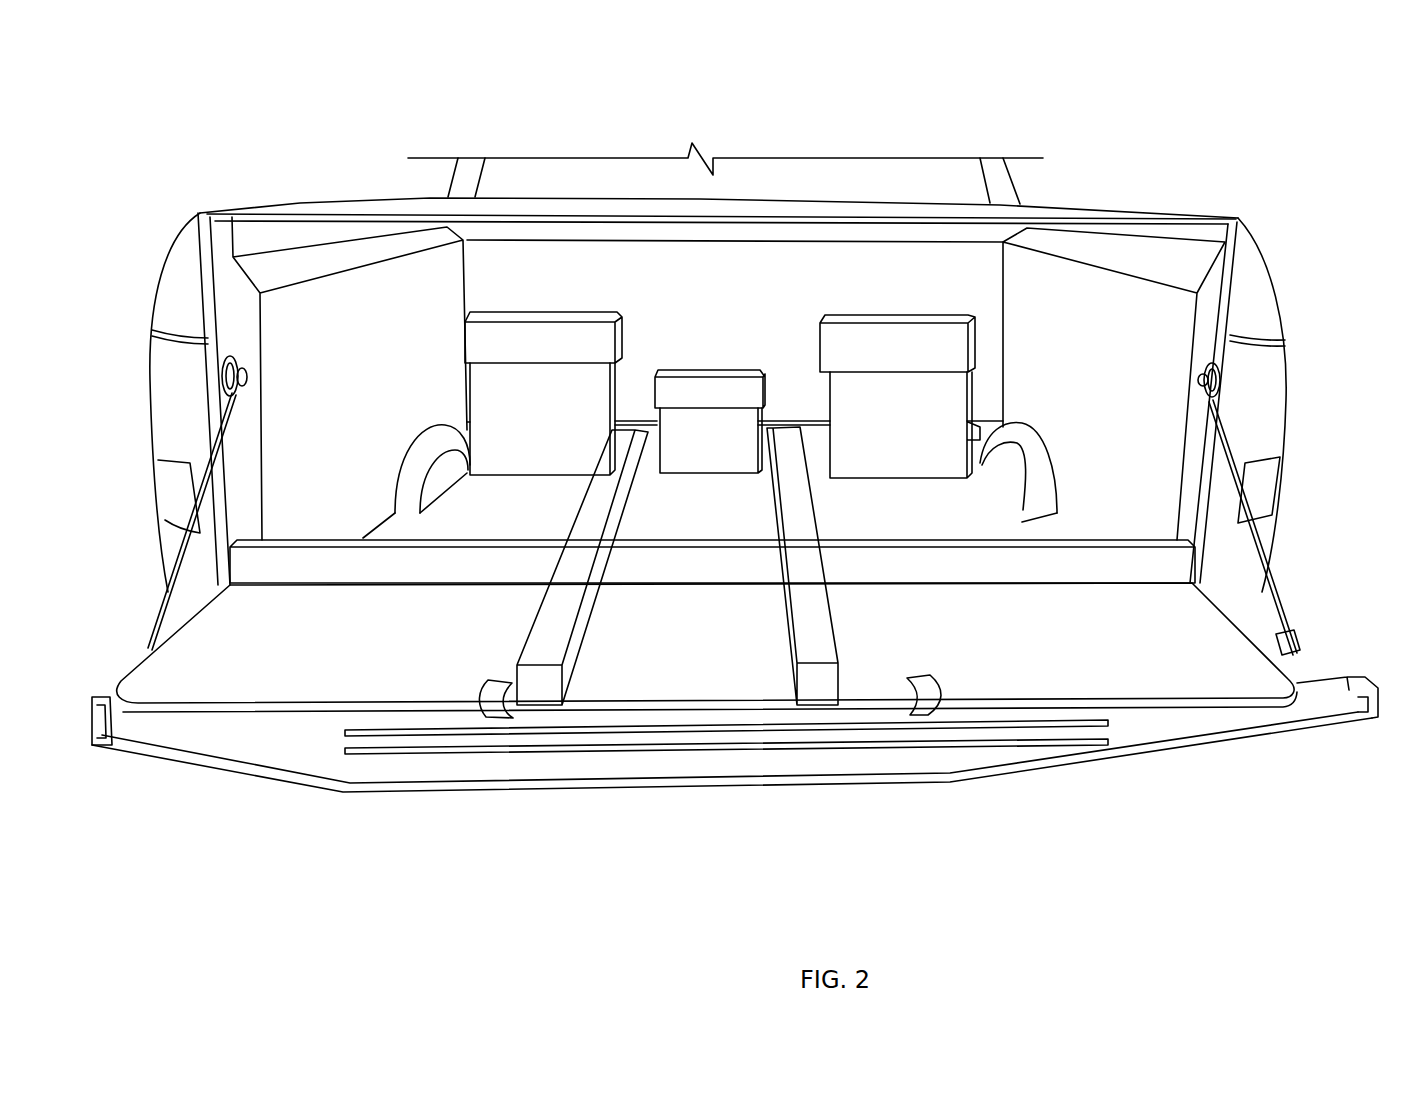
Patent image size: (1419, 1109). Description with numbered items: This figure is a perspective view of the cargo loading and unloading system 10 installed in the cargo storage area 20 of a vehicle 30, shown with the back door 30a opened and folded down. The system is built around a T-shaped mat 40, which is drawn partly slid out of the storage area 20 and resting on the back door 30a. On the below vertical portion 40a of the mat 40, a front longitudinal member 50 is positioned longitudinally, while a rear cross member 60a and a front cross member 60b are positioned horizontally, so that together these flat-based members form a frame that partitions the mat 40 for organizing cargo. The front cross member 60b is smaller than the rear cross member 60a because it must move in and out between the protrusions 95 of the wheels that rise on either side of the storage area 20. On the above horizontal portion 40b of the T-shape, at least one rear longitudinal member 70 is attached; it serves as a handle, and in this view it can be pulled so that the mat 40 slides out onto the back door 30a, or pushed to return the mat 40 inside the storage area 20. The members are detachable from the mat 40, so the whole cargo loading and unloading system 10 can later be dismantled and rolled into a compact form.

The cargo loading and unloading system 10 is at (1268, 147).
The cargo storage area 20 is at (1077, 400).
The vehicle 30 is at (1053, 217).
The back door 30a is at (262, 740).
The mat 40 is at (1180, 650).
The below vertical portion 40a is at (1022, 522).
The above horizontal portion 40b is at (1280, 637).
The front longitudinal member 50 is at (607, 507).
The rear cross member 60a is at (677, 573).
The front cross member 60b is at (813, 437).
The rear longitudinal member 70 is at (542, 690).
The protrusions 95 is at (415, 452).